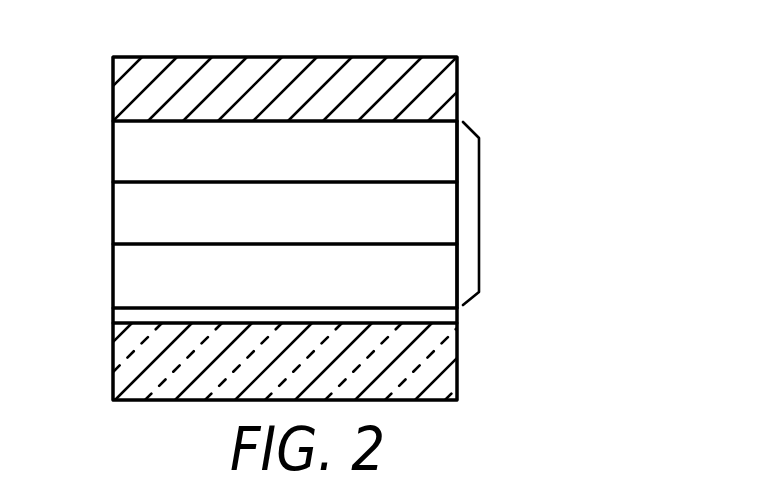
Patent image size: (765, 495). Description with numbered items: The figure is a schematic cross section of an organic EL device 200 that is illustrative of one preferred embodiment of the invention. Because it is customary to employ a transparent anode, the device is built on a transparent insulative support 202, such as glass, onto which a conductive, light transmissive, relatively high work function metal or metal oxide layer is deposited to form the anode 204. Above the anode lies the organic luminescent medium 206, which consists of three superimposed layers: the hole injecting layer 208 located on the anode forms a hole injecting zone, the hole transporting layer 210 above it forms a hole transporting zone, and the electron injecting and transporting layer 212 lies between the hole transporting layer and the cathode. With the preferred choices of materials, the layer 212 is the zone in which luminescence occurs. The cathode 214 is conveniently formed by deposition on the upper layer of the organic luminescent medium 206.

The organic EL device 200 is at (560, 98).
The transparent insulative support 202 is at (457, 362).
The anode 204 is at (457, 316).
The organic luminescent medium 206 is at (479, 205).
The hole injecting layer 208 is at (113, 284).
The hole transporting layer 210 is at (113, 220).
The electron injecting and transporting layer 212 is at (113, 163).
The cathode 214 is at (457, 92).